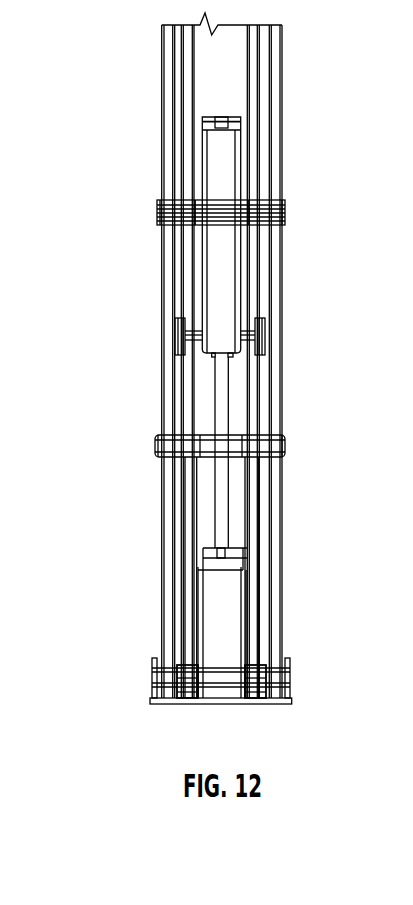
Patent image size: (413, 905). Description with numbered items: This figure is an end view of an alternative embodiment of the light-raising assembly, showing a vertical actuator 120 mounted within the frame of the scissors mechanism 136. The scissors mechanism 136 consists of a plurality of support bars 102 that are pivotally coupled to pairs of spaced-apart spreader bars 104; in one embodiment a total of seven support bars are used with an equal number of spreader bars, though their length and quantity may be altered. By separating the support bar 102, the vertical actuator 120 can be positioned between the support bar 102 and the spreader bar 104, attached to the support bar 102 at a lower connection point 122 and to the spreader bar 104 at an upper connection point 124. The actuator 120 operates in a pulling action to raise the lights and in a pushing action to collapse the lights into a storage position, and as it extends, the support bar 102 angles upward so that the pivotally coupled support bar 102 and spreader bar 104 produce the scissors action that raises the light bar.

The support bar 102 is at (265, 622).
The spreader bar 104 is at (273, 548).
The vertical actuator 120 is at (203, 177).
The lower connection point 122 is at (205, 550).
The upper connection point 124 is at (185, 322).
The scissors mechanism 136 is at (167, 375).